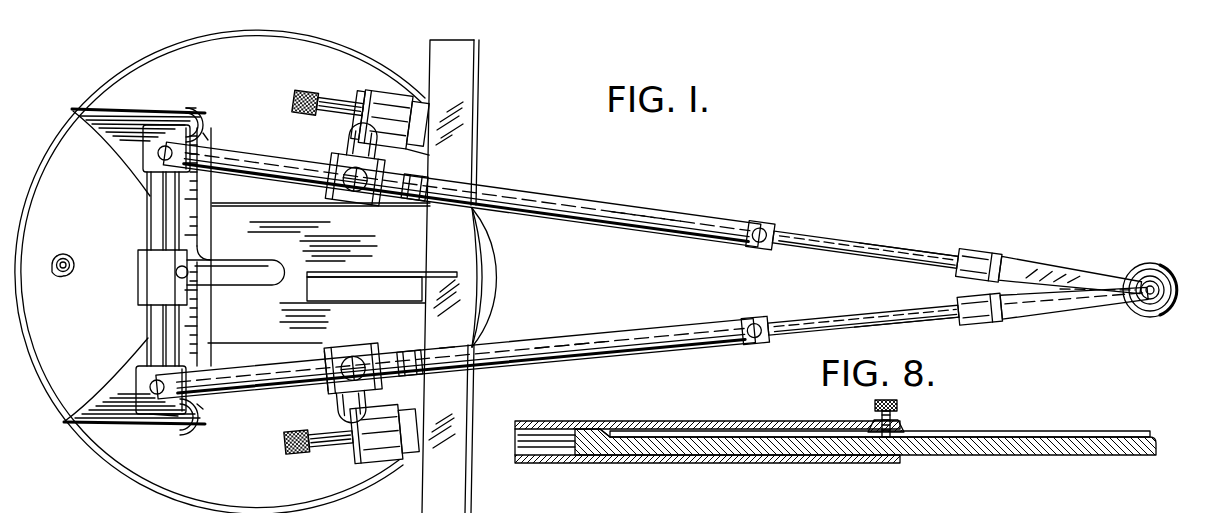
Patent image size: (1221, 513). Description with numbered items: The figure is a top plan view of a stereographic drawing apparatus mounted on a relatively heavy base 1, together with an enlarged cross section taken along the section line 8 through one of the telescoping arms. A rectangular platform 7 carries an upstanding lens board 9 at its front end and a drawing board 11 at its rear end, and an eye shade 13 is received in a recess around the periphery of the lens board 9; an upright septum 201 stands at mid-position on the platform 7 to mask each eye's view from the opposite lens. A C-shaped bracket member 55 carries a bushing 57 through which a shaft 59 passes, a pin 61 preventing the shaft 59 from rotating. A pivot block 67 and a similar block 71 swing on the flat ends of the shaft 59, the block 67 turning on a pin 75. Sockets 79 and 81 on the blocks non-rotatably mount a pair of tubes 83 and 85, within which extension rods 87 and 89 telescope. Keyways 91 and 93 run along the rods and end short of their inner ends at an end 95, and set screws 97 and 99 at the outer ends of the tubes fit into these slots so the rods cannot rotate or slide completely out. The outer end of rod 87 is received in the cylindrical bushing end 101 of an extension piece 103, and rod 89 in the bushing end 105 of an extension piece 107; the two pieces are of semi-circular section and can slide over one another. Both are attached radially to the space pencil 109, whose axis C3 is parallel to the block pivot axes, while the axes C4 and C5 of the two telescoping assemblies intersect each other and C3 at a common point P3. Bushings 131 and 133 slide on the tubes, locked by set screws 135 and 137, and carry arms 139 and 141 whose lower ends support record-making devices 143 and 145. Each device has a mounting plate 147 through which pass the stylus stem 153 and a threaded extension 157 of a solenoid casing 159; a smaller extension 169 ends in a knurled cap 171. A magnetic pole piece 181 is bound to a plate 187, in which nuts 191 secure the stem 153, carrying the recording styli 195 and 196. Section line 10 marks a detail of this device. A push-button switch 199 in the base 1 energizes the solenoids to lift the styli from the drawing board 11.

In FIG. 1, the base 1 is at (136, 462).
In FIG. 1, the rectangular platform 7 is at (228, 336).
In FIG. 1, the section line 8— 8 is at (560, 208).
In FIG. 1, the lens board 9 is at (207, 134).
In FIG. 1, the section line 10— 10 is at (282, 478).
In FIG. 1, the drawing board 11 is at (463, 391).
In FIG. 1, the eye shade 13 is at (124, 134).
In FIG. 1, the bracket member 55 is at (242, 268).
In FIG. 1, the bushing 57 is at (137, 289).
In FIG. 1, the bracket or shaft 59 is at (153, 220).
In FIG. 1, the pin 61 is at (203, 257).
In FIG. 1, the pivot block 67 is at (173, 124).
In FIG. 1, the block 71 is at (163, 424).
In FIG. 1, the pin 75 is at (160, 157).
In FIG. 1, the socket 79 is at (212, 137).
In FIG. 1, the socket 81 is at (203, 408).
In FIG. 1, the tube 83 is at (279, 163).
In FIG. 8, the tube 83 is at (550, 449).
In FIG. 1, the tube 85 is at (278, 386).
In FIG. 1, the extension rod 87 is at (838, 236).
In FIG. 8, the extension rod 87 is at (675, 449).
In FIG. 1, the extension rod 89 is at (860, 331).
In FIG. 1, the slot or keyway 91 is at (918, 253).
In FIG. 8, the slot or keyway 91 is at (973, 434).
In FIG. 1, the slot or keyway 93 is at (892, 307).
In FIG. 8, the slot end 95 is at (608, 431).
In FIG. 1, the set screw 97 is at (760, 228).
In FIG. 8, the set screw 97 is at (898, 404).
In FIG. 1, the set screw 99 is at (757, 326).
In FIG. 1, the cylindrical bushing end 101 is at (977, 256).
In FIG. 1, the extension piece 103 is at (1043, 268).
In FIG. 1, the cylindrical bushing end 105 is at (975, 323).
In FIG. 1, the extension piece 107 is at (1043, 308).
In FIG. 1, the space pencil 109 is at (1143, 313).
In FIG. 1, the bushing 131 is at (330, 202).
In FIG. 1, the bushing 133 is at (322, 361).
In FIG. 1, the set screw 135 is at (352, 166).
In FIG. 1, the set screw 137 is at (357, 358).
In FIG. 1, the arm or bracket 139 is at (423, 156).
In FIG. 1, the arm or bracket 141 is at (364, 397).
In FIG. 1, the record-making device 143 is at (350, 86).
In FIG. 1, the record-making device 145 is at (338, 461).
In FIG. 1, the mounting plate 147 is at (377, 92).
In FIG. 1, the cylindrical stem 153 is at (346, 196).
In FIG. 1, the hollow externally threaded extension 157 is at (358, 135).
In FIG. 1, the cylindrical solenoid casing 159 is at (389, 100).
In FIG. 1, the cylindrical extension 169 is at (313, 92).
In FIG. 1, the externally knurled cap 171 is at (298, 100).
In FIG. 1, the armature or pole piece 181 is at (415, 108).
In FIG. 1, the plate 187 is at (428, 137).
In FIG. 1, the nuts or collars 191 is at (407, 353).
In FIG. 1, the recording stylus 195 is at (443, 349).
In FIG. 1, the recording stylus 196 is at (448, 192).
In FIG. 1, the push-button switch 199 is at (64, 254).
In FIG. 1, the plate or septum 201 is at (416, 271).
In FIG. 1, the axis of the space pencil C3 is at (1098, 290).
In FIG. 1, the axis of first telescoping assembly C4 is at (640, 217).
In FIG. 1, the axis of second telescoping assembly C5 is at (580, 347).
In FIG. 1, the common intersection point P3 is at (1153, 291).